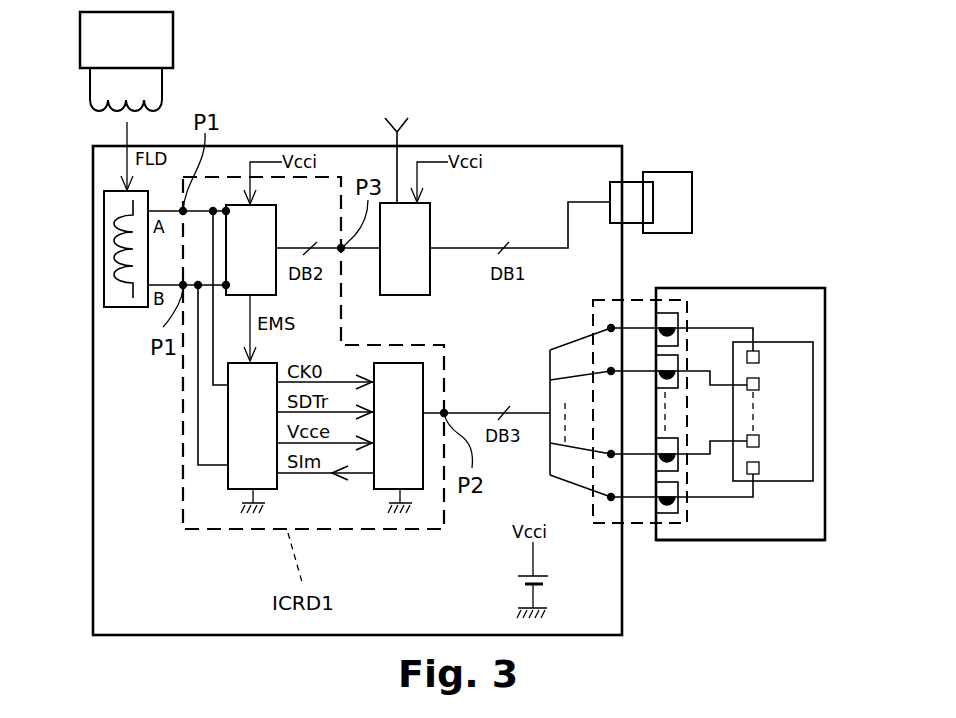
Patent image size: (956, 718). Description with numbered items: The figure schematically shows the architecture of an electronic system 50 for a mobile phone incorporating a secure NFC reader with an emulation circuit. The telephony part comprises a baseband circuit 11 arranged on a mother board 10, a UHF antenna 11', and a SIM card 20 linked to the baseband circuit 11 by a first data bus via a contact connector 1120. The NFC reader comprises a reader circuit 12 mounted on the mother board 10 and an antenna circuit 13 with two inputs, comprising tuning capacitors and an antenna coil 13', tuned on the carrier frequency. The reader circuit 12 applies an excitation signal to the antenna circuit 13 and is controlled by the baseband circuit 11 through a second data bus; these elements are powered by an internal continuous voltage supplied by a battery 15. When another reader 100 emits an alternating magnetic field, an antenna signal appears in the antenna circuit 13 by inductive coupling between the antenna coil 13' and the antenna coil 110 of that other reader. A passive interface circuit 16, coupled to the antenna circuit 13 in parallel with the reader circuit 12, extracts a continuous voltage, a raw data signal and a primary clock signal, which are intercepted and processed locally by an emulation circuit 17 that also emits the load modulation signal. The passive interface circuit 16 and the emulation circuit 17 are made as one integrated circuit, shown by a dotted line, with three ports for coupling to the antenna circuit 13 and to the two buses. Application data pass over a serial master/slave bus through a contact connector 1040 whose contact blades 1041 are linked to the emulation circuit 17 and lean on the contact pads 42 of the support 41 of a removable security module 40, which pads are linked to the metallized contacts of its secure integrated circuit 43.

The other reader 100 is at (141, 49).
The antenna coil of the other reader 110 is at (166, 103).
The mother board 10 is at (553, 146).
The baseband circuit 11 is at (405, 249).
The UHF antenna 11' is at (354, 149).
The reader circuit 12 is at (265, 256).
The antenna circuit 13 is at (85, 250).
The antenna coil 13' is at (86, 249).
The battery 15 is at (518, 577).
The passive interface circuit 16 is at (267, 429).
The emulation circuit 17 is at (414, 429).
The SIM card 20 is at (692, 197).
The contact connector 1120 is at (632, 182).
The electronic system 50 is at (648, 85).
The removable security module 40 is at (836, 318).
The support 41 is at (773, 540).
The contact pads 42 is at (667, 315).
The secure integrated circuit 43 is at (800, 421).
The contact connector 1040 is at (645, 525).
The contact blades 1041 is at (620, 523).